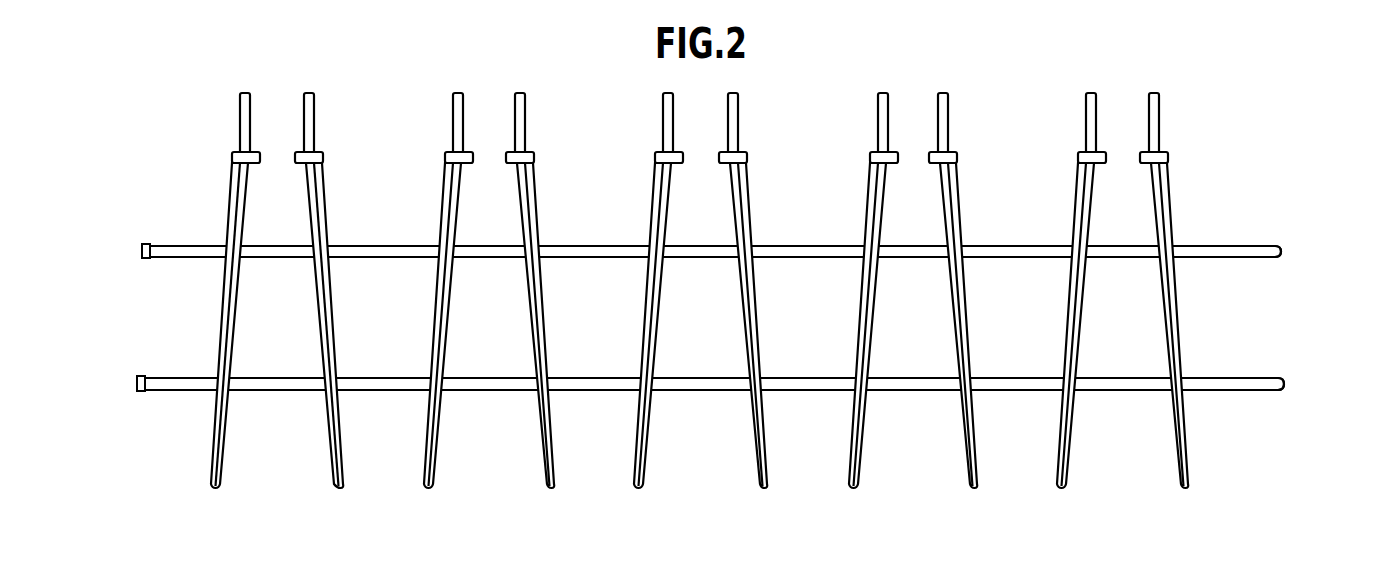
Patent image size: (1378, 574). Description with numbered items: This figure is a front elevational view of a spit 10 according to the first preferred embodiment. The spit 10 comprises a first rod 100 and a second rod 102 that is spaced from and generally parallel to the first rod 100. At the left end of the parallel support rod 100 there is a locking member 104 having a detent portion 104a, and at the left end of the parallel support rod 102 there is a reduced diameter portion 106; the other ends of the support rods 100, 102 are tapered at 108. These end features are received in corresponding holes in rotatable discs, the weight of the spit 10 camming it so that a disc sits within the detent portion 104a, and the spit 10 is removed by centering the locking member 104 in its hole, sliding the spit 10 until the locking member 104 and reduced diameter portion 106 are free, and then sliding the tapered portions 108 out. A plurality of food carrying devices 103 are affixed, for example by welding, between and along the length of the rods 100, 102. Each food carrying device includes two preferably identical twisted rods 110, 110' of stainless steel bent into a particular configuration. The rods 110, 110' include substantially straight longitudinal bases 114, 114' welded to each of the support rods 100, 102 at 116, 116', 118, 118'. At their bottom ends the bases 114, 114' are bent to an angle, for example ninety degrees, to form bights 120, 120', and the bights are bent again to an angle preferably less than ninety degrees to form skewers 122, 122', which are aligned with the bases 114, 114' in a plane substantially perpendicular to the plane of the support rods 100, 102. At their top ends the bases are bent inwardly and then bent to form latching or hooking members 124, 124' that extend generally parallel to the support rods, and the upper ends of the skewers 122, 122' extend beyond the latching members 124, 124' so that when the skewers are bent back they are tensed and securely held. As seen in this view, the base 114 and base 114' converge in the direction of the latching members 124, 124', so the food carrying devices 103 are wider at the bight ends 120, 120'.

The spit 10 is at (1196, 82).
The first rod 100 is at (1228, 252).
The second rod 102 is at (1253, 385).
The food carrying devices 103 is at (913, 103).
The locking member 104 is at (135, 247).
The detent portion 104a is at (146, 258).
The reduced diameter portion 106 is at (147, 388).
The tapered portions 108 is at (1282, 258).
The twisted rod 110 is at (234, 308).
The twisted rod 110' is at (338, 310).
The longitudinal base 114 is at (200, 201).
The longitudinal base 114' is at (357, 201).
The weld 116 is at (202, 278).
The weld 116' is at (288, 278).
The weld 118 is at (193, 411).
The weld 118' is at (300, 411).
The bight 120 is at (253, 459).
The bight 120' is at (374, 461).
The skewer 122 is at (266, 317).
The skewer 122' is at (372, 317).
The latching member 124 is at (640, 144).
The latching member 124' is at (769, 142).